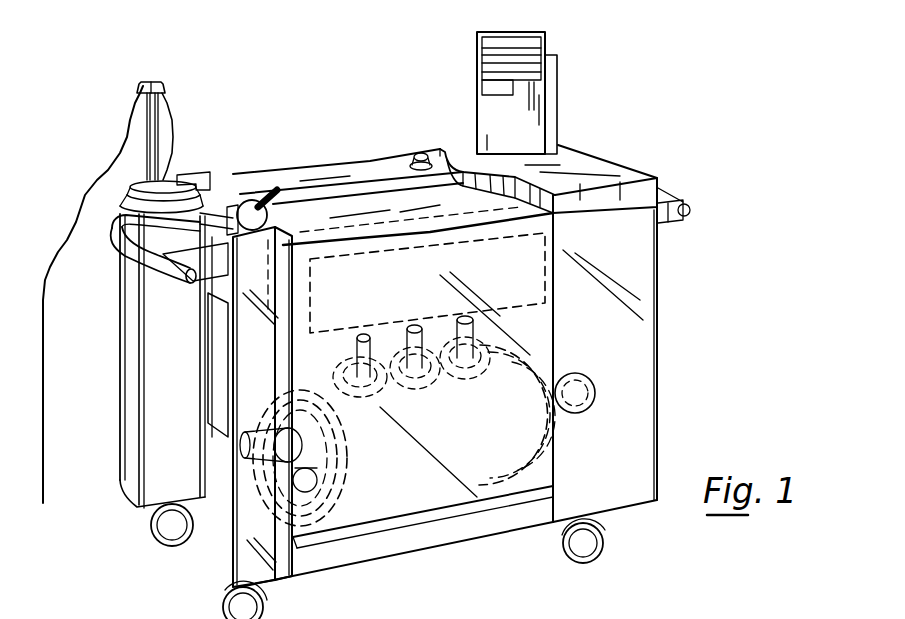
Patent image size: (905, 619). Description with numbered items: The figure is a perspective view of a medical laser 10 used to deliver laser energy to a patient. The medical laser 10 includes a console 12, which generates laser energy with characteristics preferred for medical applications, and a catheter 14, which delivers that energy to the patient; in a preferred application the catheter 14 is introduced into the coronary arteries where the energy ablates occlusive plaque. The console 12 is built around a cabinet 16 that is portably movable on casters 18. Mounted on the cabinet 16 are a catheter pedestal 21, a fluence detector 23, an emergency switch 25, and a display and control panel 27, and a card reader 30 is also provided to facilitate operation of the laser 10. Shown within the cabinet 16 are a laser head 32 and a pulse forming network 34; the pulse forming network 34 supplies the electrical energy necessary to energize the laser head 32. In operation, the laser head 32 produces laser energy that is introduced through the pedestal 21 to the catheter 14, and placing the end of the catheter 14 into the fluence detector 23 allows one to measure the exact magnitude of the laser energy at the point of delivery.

The medical laser 10 is at (582, 89).
The console 12 is at (630, 150).
The catheter 14 is at (47, 377).
The cabinet 16 is at (643, 313).
The casters 18 is at (177, 524).
The catheter pedestal 21 is at (108, 205).
The fluence detector 23 is at (262, 196).
The emergency switch 25 is at (413, 152).
The display and control panel 27 is at (477, 117).
The card reader 30 is at (200, 170).
The laser head 32 is at (568, 442).
The pulse forming network 34 is at (527, 285).